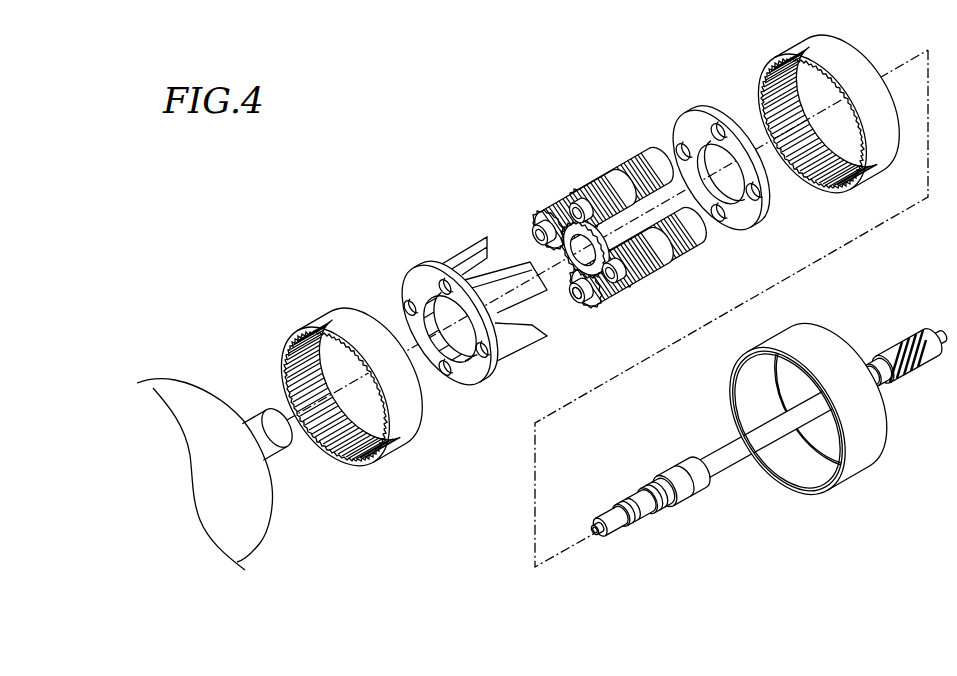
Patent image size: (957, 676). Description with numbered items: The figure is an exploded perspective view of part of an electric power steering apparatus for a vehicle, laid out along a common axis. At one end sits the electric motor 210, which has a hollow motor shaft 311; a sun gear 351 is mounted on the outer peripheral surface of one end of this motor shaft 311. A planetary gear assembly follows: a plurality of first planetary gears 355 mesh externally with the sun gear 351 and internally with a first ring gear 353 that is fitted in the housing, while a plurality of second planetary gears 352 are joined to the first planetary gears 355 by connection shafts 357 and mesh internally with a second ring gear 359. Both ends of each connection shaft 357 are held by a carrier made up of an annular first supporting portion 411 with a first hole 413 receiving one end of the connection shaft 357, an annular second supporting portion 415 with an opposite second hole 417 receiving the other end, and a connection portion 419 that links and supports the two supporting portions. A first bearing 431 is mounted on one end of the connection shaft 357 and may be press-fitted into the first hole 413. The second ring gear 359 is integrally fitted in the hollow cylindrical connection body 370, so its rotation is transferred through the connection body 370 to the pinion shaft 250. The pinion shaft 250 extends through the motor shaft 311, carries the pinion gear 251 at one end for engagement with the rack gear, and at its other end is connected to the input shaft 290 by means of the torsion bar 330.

The electric motor 210 is at (185, 370).
The motor shaft 311 is at (273, 445).
The first ring gear 353 is at (326, 300).
The first supporting portion 411 is at (418, 279).
The first hole 413 is at (443, 373).
The connection portion 419 is at (463, 260).
The sun gear 351 is at (542, 216).
The second planetary gears 352 is at (622, 163).
The first planetary gears 355 is at (590, 182).
The connection shaft 357 is at (577, 302).
The first bearing 431 is at (573, 306).
The second supporting portion 415 is at (683, 130).
The second hole 417 is at (715, 222).
The second ring gear 359 is at (754, 78).
The pinion shaft 250 is at (750, 452).
The pinion gear 251 is at (918, 368).
The input shaft 290 is at (625, 523).
The torsion bar 330 is at (593, 533).
The connection body 370 is at (865, 478).